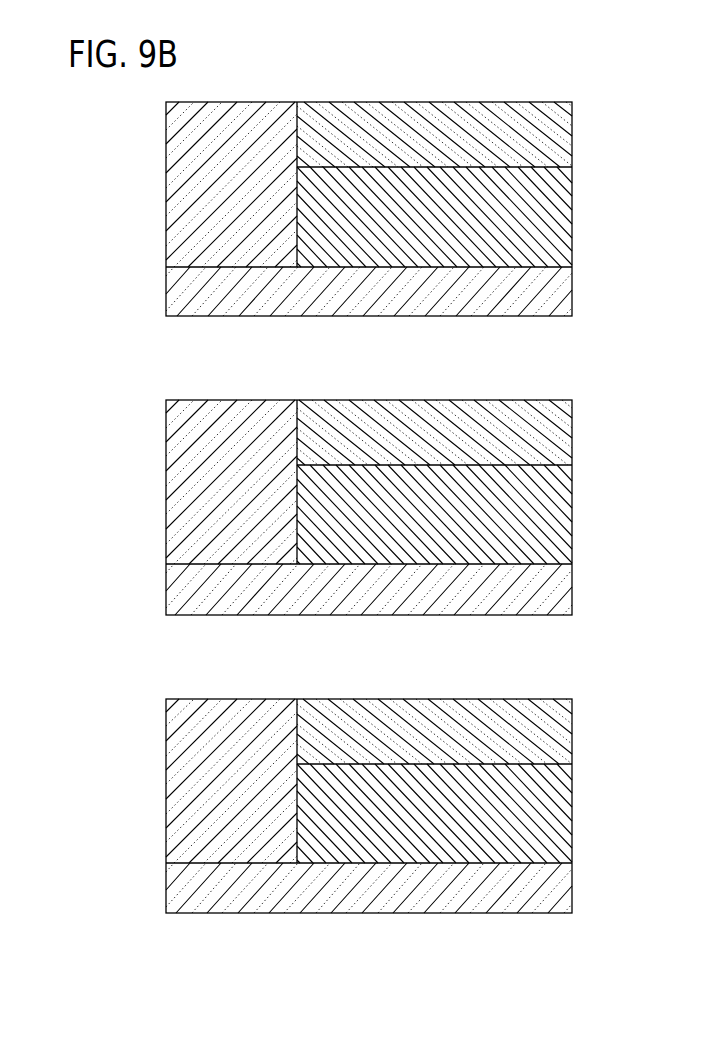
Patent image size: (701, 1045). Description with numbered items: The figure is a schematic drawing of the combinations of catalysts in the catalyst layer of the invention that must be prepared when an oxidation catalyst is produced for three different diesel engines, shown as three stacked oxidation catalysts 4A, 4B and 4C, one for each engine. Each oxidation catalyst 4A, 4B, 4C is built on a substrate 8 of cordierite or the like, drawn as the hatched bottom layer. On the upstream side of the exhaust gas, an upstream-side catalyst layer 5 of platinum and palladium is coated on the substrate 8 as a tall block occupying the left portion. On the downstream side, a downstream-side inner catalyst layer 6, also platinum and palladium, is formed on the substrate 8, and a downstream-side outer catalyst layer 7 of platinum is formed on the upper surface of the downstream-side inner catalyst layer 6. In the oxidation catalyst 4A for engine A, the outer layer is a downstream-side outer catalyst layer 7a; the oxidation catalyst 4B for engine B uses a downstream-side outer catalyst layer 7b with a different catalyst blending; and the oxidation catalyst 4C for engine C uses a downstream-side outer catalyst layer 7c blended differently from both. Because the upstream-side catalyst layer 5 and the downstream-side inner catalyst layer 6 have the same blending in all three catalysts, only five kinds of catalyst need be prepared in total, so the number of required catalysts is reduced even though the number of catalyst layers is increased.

The oxidation catalyst 4A is at (140, 150).
The oxidation catalyst 4B is at (140, 415).
The oxidation catalyst 4C is at (140, 716).
The upstream-side catalyst layer 5 is at (172, 483).
The downstream-side inner catalyst layer 6 is at (494, 515).
The downstream-side outer catalyst layer 7 is at (487, 433).
The downstream-side outer catalyst layer 7a is at (572, 132).
The downstream-side outer catalyst layer 7b is at (572, 430).
The downstream-side outer catalyst layer 7c is at (572, 729).
The substrate 8 is at (572, 289).